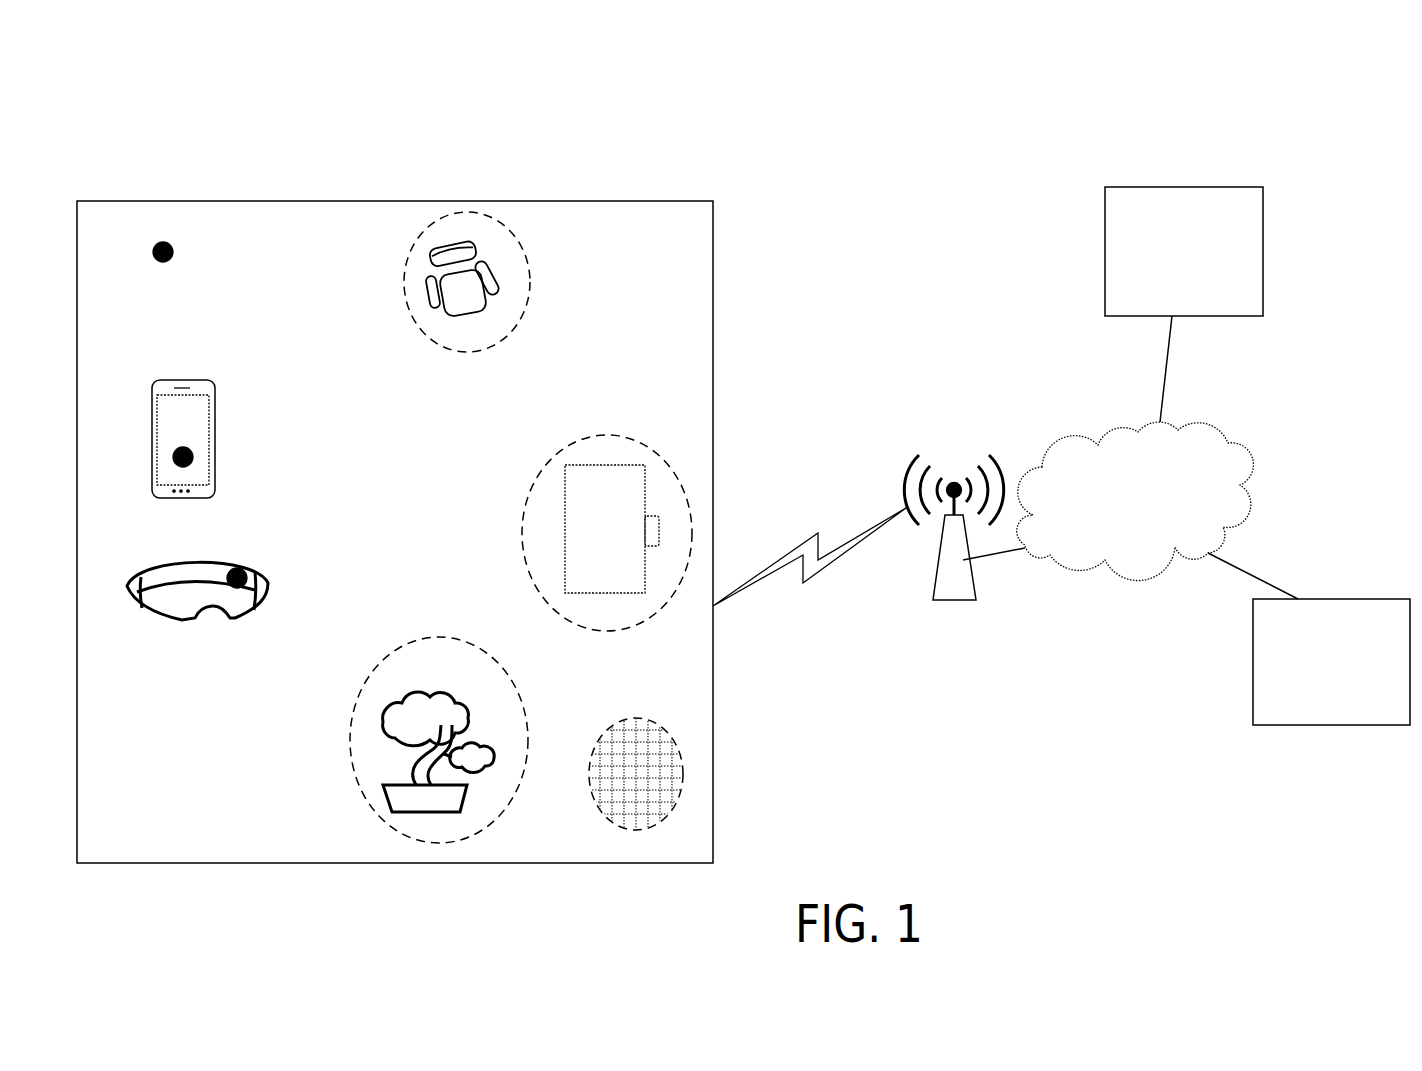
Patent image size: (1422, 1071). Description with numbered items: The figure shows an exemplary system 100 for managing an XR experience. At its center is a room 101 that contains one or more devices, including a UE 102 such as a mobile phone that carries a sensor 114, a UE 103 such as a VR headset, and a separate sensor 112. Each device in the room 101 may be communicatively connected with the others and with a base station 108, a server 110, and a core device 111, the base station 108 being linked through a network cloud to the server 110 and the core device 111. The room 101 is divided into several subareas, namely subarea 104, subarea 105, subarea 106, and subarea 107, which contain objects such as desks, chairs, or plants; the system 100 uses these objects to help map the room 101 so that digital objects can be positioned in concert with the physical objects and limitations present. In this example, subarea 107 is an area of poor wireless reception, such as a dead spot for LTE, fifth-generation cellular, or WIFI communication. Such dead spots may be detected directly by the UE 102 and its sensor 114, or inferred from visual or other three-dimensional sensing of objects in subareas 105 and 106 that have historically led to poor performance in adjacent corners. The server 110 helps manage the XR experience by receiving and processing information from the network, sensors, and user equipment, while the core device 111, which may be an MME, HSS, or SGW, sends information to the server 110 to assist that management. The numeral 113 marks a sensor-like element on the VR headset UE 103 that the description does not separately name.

The system 100 is at (306, 58).
The room 101 is at (713, 277).
The UE 102 is at (203, 444).
The UE 103 is at (168, 625).
The subarea 104 is at (402, 298).
The subarea 105 is at (530, 497).
The subarea 106 is at (352, 730).
The subarea 107 is at (655, 787).
The base station 108 is at (942, 582).
The server 110 is at (1104, 247).
The core device 111 is at (1270, 725).
The sensor 112 is at (172, 257).
The sensor 113 is at (243, 570).
The sensor 114 is at (188, 463).